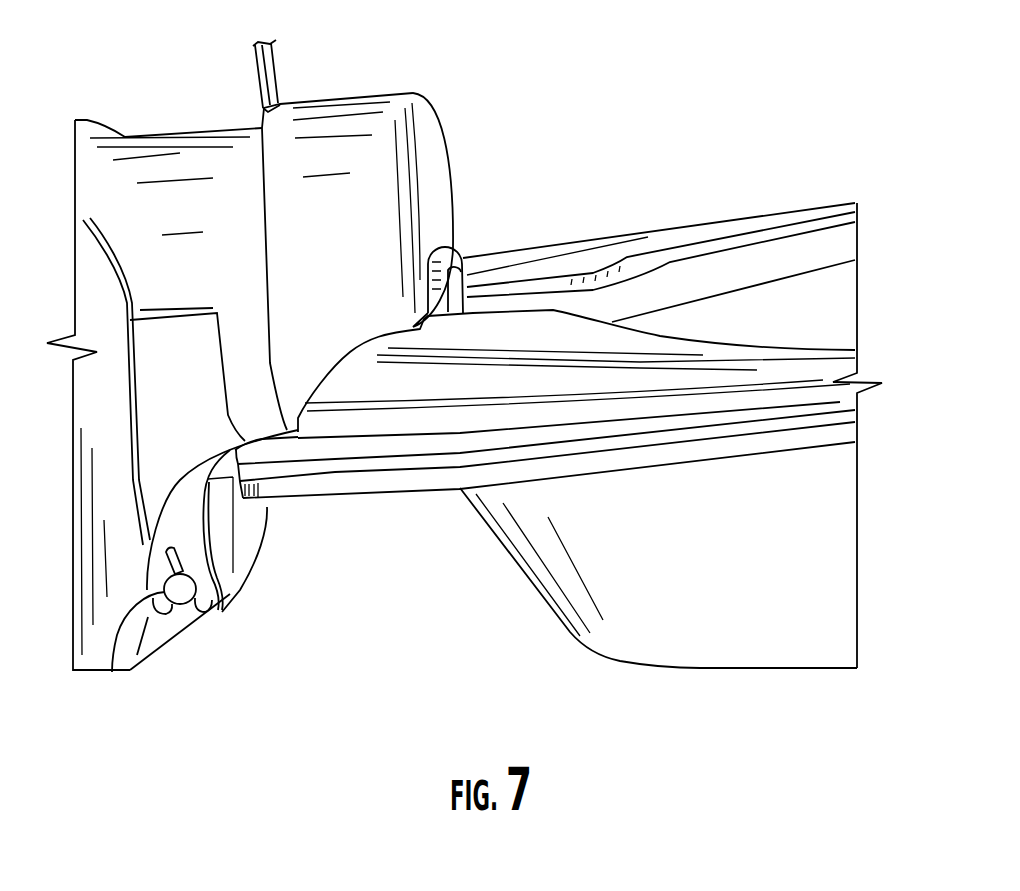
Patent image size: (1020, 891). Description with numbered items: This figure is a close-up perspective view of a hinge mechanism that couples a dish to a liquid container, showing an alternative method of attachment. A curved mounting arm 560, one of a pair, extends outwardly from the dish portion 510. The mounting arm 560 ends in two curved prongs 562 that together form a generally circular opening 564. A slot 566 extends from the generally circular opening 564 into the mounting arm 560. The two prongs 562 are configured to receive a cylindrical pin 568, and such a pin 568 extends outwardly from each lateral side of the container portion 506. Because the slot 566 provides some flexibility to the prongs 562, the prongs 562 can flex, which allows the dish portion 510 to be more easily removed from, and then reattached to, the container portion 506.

The container portion 506 is at (90, 120).
The dish portion 510 is at (723, 221).
The mounting arm 560 is at (205, 506).
The curved prongs 562 is at (230, 596).
The generally circular opening 564 is at (112, 672).
The slot 566 is at (165, 572).
The cylindrical pin 568 is at (180, 600).